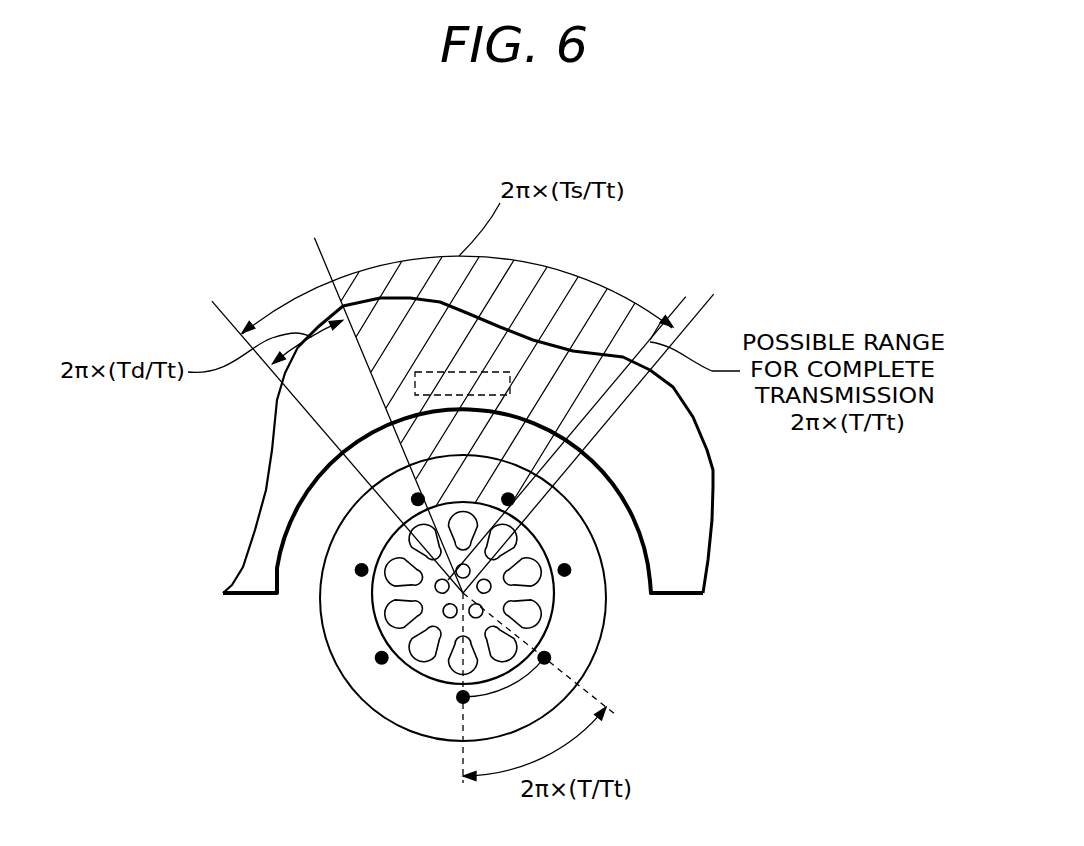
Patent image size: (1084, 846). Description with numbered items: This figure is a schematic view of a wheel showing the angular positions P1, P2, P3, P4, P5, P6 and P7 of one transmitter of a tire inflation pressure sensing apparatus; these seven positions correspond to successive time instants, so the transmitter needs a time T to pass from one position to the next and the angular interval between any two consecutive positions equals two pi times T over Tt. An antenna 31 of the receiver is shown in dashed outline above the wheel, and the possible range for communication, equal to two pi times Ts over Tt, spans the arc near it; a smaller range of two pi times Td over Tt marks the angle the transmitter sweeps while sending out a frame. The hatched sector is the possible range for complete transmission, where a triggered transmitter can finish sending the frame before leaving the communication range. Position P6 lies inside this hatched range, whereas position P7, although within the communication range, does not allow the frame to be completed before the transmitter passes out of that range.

The antenna 31 is at (510, 390).
The angular position P1 is at (351, 585).
The angular position P2 is at (366, 655).
The angular position P3 is at (447, 702).
The angular position P4 is at (560, 650).
The angular position P5 is at (575, 585).
The angular position P6 is at (494, 493).
The angular position P7 is at (404, 495).